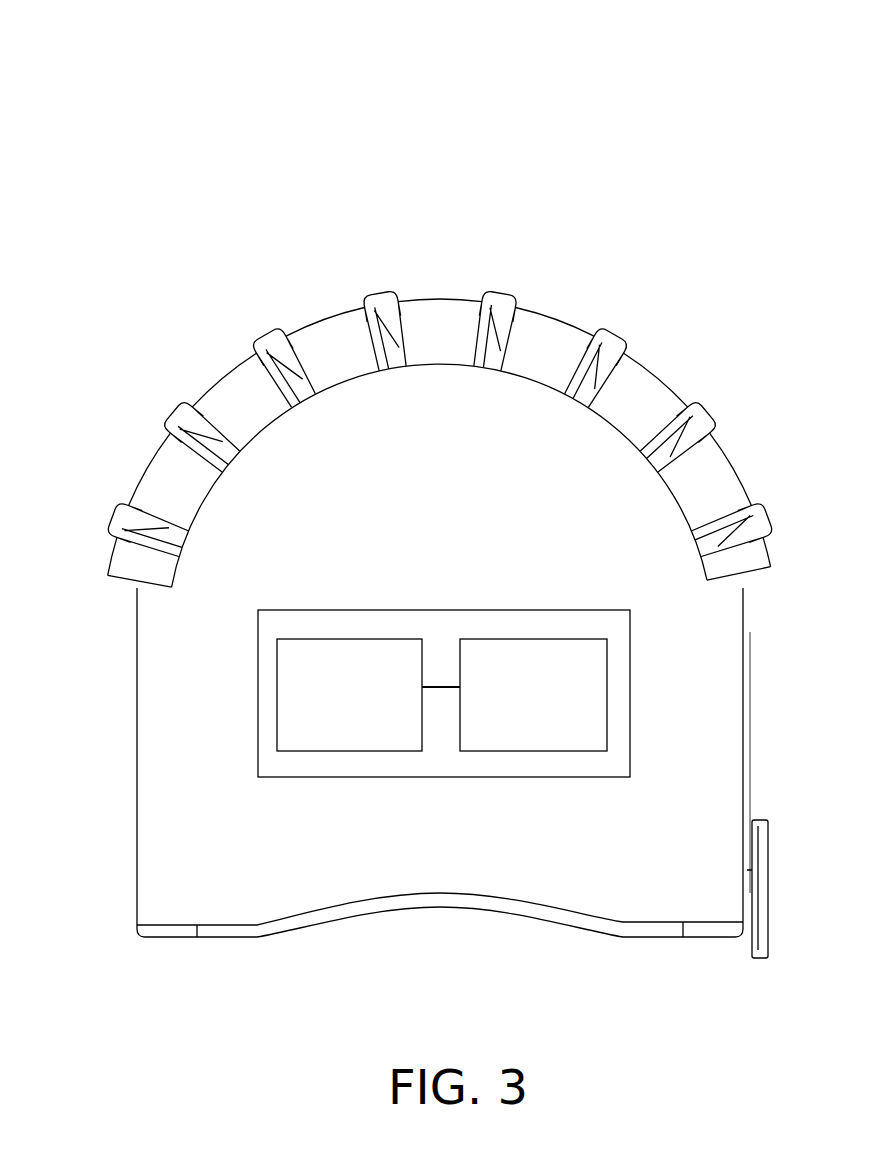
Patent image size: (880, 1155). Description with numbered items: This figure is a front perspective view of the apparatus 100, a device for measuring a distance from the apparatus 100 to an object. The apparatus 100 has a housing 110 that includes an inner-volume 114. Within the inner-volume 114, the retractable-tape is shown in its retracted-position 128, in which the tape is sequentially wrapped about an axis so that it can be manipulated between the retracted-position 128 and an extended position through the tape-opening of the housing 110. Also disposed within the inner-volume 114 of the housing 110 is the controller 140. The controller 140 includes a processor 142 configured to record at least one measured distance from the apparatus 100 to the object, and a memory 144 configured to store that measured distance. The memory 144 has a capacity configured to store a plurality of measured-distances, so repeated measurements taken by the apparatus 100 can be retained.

The apparatus 100 is at (667, 97).
The retracted-position 128 is at (683, 149).
The housing 110 is at (435, 329).
The inner-volume 114 is at (583, 480).
The controller 140 is at (274, 618).
The processor 142 is at (308, 717).
The memory 144 is at (558, 706).